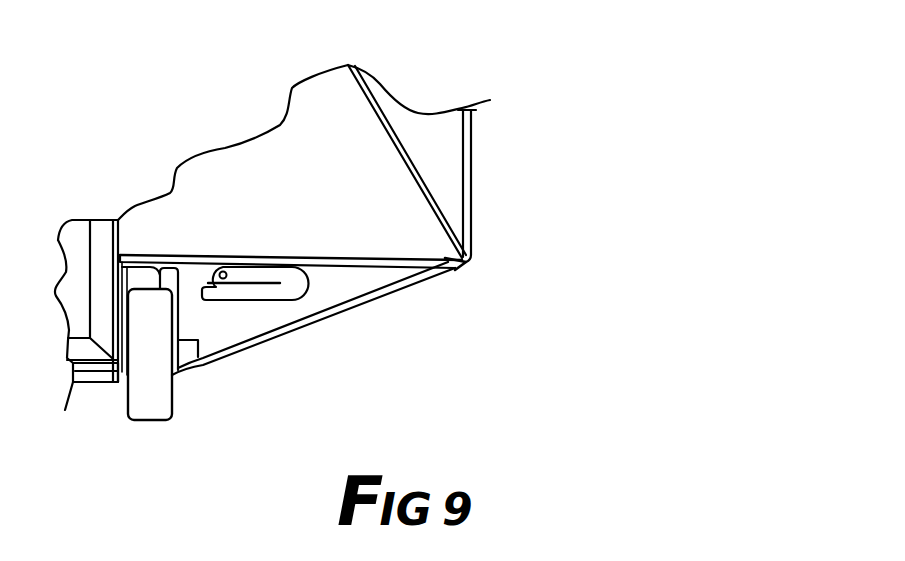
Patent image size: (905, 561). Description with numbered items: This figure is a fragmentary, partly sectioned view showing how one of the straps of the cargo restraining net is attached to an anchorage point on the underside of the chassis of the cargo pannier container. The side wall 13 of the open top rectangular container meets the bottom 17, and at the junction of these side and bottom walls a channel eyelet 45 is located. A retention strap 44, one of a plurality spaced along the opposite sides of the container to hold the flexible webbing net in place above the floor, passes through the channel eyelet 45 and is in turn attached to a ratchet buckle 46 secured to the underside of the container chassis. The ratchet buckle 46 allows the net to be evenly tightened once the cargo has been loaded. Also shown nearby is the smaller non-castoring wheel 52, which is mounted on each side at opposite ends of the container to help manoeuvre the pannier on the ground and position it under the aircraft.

The side wall 13 is at (473, 188).
The bottom 17 is at (88, 373).
The retention strap 44 is at (440, 90).
The channel eyelet 45 is at (468, 267).
The ratchet buckle 46 is at (263, 300).
The non-castoring wheel 52 is at (153, 387).